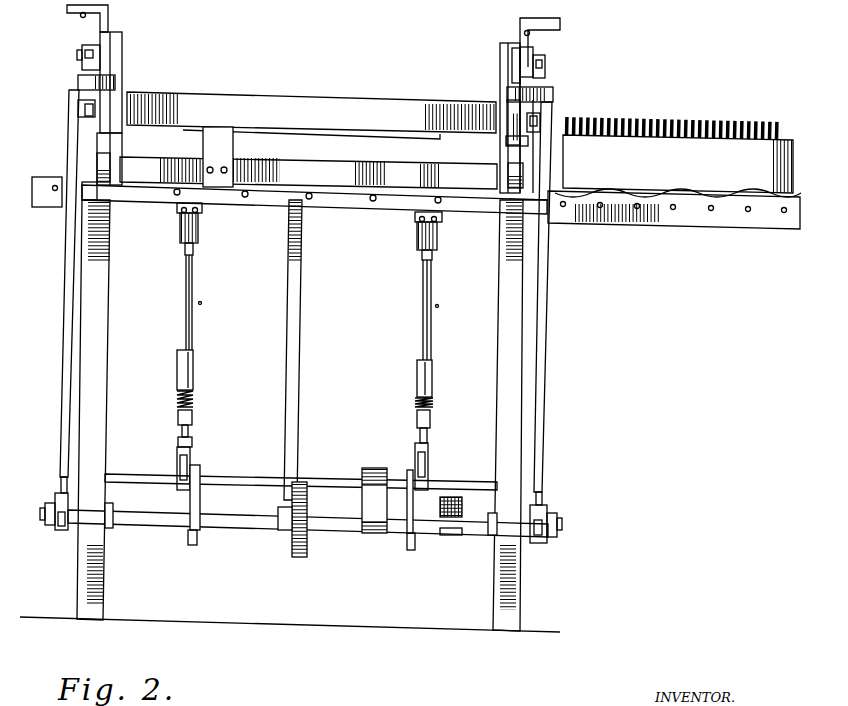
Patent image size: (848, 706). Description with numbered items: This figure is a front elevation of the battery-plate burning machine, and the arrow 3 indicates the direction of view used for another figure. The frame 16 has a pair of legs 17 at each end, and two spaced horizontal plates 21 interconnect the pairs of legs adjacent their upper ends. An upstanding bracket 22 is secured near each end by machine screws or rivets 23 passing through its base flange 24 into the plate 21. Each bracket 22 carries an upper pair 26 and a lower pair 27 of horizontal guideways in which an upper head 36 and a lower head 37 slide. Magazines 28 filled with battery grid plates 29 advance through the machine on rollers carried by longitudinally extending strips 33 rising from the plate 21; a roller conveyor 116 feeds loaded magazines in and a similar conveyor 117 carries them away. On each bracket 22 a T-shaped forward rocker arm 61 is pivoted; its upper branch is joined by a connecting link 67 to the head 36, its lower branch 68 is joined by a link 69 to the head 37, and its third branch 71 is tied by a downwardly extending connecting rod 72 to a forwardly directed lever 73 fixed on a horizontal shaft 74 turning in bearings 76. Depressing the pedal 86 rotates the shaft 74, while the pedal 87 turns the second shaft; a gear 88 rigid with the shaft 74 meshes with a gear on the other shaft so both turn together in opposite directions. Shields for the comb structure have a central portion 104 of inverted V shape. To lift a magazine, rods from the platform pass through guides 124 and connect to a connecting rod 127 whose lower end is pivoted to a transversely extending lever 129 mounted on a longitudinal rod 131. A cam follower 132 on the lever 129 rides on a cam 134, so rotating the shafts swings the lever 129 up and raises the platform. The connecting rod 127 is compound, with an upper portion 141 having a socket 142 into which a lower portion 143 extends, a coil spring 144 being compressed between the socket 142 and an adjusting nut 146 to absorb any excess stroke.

The direction-of-view arrow 3 is at (632, 388).
The frame 16 is at (552, 240).
The legs 17 is at (95, 350).
The horizontal plates 21 is at (353, 204).
The upstanding bracket 22 is at (120, 48).
The machine screws or rivets 23 is at (97, 178).
The base flange 24 is at (88, 190).
The upper pair of guideways 26 is at (100, 38).
The lower pair of guideways 27 is at (100, 102).
The magazine 28 is at (722, 153).
The battery grid plates 29 is at (674, 116).
The longitudinally extending strips 33 is at (350, 164).
The upper head 36 is at (520, 58).
The lower head 37 is at (515, 130).
The forward rocker arm 61 is at (80, 65).
The connecting link 67 is at (538, 56).
The lower branch 68 is at (540, 98).
The link 69 is at (535, 125).
The third branch 71 is at (88, 82).
The connecting rod 72 is at (62, 345).
The lever 73 is at (58, 530).
The shaft 74 is at (472, 526).
The bearings 76 is at (108, 523).
The pedal 86 is at (372, 468).
The pedal 87 is at (450, 498).
The gear 88 is at (300, 558).
The central portion 104 is at (148, 476).
The roller conveyor 116 is at (730, 220).
The conveyor 117 is at (50, 207).
The guides 124 is at (184, 230).
The connecting rod 127 is at (201, 303).
The lever 129 is at (178, 486).
The longitudinally extending rod 131 is at (340, 455).
The cam follower 132 is at (200, 470).
The cam 134 is at (193, 546).
The upper portion 141 is at (195, 268).
The socket 142 is at (193, 363).
The lower portion 143 is at (430, 420).
The coil spring 144 is at (400, 436).
The adjusting nut 146 is at (200, 418).